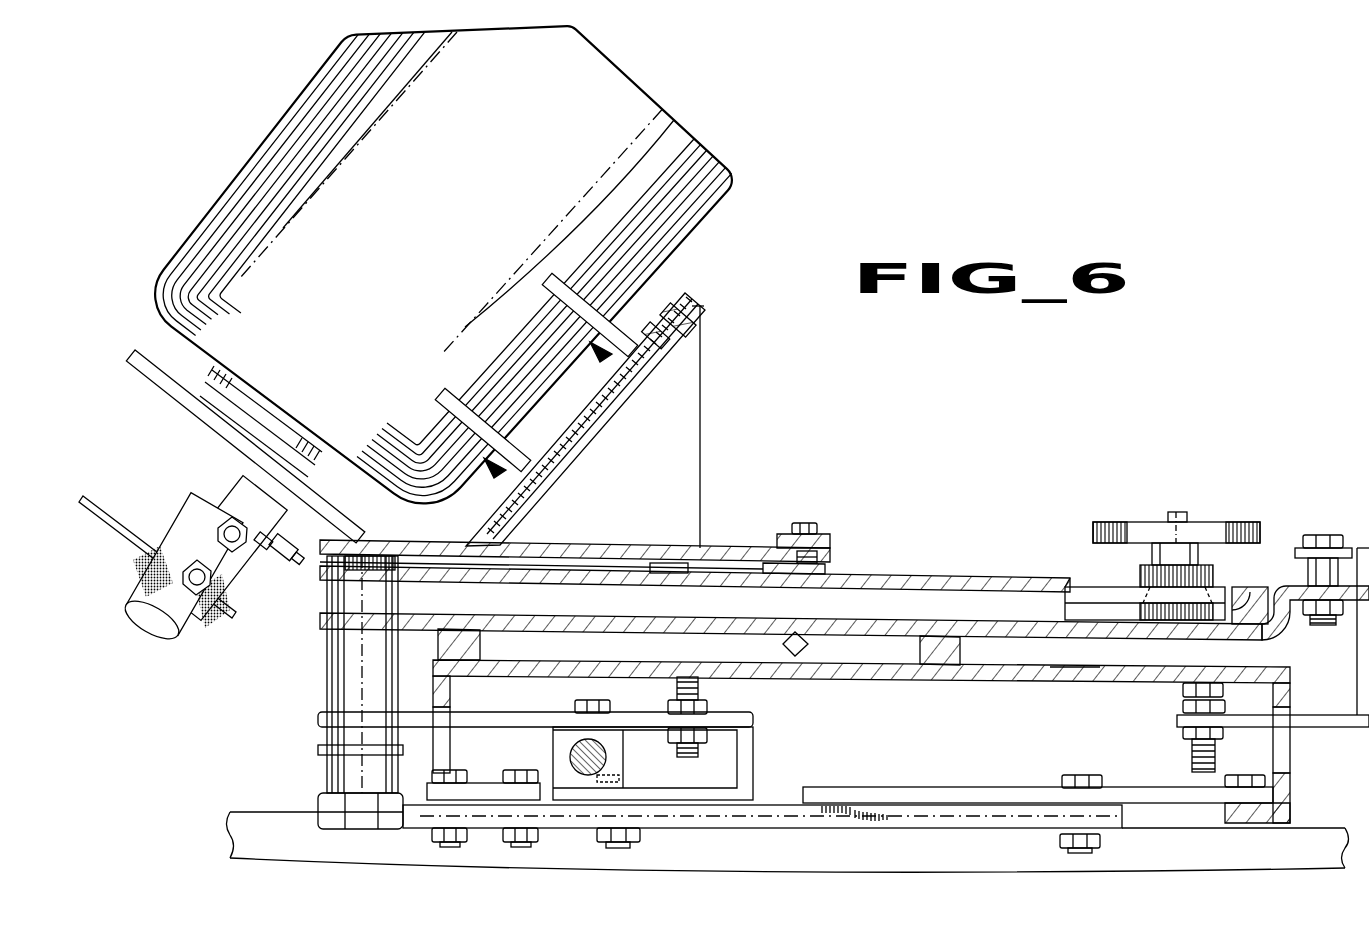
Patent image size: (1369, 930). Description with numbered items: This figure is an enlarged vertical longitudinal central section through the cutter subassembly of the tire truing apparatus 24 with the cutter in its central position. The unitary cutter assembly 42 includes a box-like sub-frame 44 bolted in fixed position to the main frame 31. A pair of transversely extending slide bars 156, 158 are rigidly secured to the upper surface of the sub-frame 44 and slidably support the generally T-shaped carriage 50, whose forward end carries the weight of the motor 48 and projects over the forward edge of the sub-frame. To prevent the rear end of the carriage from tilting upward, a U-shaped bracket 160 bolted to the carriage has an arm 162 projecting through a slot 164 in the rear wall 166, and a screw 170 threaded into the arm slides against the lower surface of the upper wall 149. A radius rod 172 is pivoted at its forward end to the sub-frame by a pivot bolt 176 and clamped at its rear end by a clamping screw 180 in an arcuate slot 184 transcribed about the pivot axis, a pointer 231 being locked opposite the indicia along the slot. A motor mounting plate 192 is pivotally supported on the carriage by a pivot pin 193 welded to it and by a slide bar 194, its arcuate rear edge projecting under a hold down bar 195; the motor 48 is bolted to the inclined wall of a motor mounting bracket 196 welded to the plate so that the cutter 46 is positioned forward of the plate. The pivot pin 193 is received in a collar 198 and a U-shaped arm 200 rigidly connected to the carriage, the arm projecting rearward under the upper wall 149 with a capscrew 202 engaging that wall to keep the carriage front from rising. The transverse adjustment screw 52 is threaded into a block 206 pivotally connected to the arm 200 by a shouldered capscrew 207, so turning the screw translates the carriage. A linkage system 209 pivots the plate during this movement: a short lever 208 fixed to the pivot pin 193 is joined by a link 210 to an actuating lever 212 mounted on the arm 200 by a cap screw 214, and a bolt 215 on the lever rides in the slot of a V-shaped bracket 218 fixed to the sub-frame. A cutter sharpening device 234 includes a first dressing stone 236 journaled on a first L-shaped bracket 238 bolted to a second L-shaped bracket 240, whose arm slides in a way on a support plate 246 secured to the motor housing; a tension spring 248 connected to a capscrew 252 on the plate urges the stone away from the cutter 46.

The tire truing apparatus 24 is at (910, 370).
The main frame 31 is at (222, 830).
The unitary cutter assembly 42 is at (962, 517).
The sub-frame 44 is at (1128, 683).
The cutter 46 is at (86, 500).
The motor 48 is at (430, 214).
The carriage 50 is at (994, 578).
The transverse adjustment screw 52 is at (607, 757).
The upper wall 149 is at (1060, 680).
The slide bar 156 is at (460, 632).
The slide bar 158 is at (936, 638).
The U-shaped bracket 160 is at (1362, 550).
The arm 162 is at (1312, 717).
The slot 164 is at (1280, 745).
The rear wall 166 is at (1280, 783).
The screw 170 is at (1190, 748).
The radius rod 172 is at (1088, 587).
The pivot bolt 176 is at (656, 574).
The clamping screw 180 is at (1120, 530).
The arcuate slot 184 is at (1142, 642).
The motor mounting plate 192 is at (718, 548).
The pivot pin 193 is at (412, 561).
The slide bar 194 is at (824, 567).
The hold down bar 195 is at (832, 540).
The motor mounting bracket 196 is at (686, 328).
The collar 198 is at (330, 662).
The U-shaped arm 200 is at (318, 718).
The capscrew 202 is at (710, 690).
The block 206 is at (553, 757).
The shouldered capscrew 207 is at (575, 708).
The short lever 208 is at (318, 750).
The linkage system 209 is at (908, 838).
The link 210 is at (427, 792).
The actuating lever 212 is at (703, 826).
The cap screw 214 is at (618, 843).
The bolt 215 is at (1074, 777).
The V-shaped bracket 218 is at (833, 788).
The pointer 231 is at (1256, 590).
The cutter sharpening device 234 is at (112, 605).
The first dressing stone 236 is at (204, 628).
The first L-shaped bracket 238 is at (173, 613).
The second L-shaped bracket 240 is at (225, 548).
The support plate 246 is at (181, 392).
The tension spring 248 is at (280, 530).
The capscrew 252 is at (264, 559).